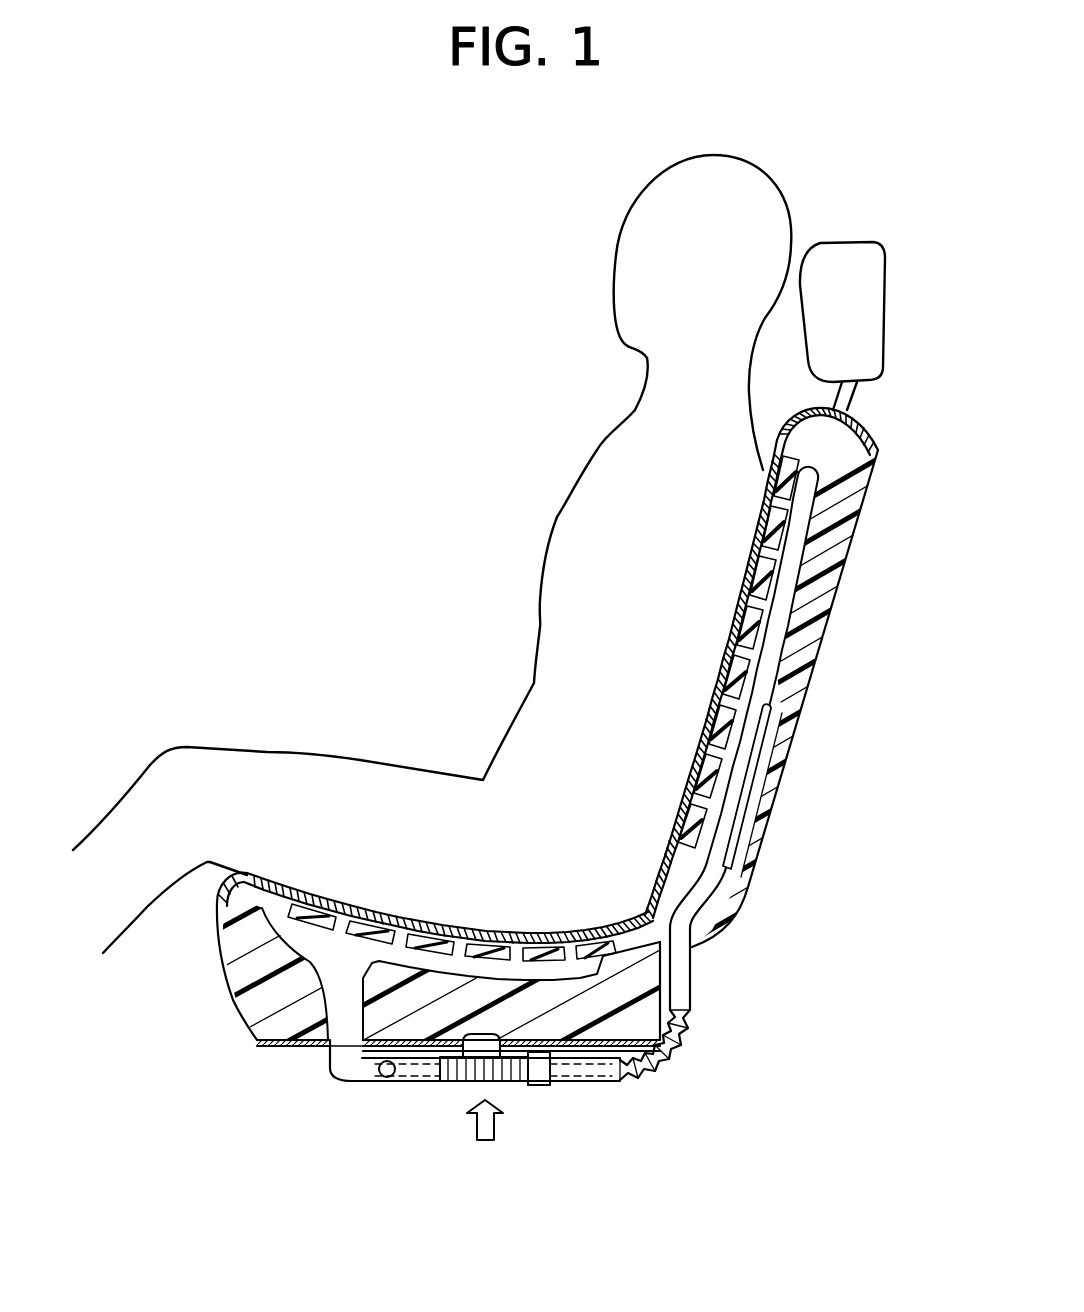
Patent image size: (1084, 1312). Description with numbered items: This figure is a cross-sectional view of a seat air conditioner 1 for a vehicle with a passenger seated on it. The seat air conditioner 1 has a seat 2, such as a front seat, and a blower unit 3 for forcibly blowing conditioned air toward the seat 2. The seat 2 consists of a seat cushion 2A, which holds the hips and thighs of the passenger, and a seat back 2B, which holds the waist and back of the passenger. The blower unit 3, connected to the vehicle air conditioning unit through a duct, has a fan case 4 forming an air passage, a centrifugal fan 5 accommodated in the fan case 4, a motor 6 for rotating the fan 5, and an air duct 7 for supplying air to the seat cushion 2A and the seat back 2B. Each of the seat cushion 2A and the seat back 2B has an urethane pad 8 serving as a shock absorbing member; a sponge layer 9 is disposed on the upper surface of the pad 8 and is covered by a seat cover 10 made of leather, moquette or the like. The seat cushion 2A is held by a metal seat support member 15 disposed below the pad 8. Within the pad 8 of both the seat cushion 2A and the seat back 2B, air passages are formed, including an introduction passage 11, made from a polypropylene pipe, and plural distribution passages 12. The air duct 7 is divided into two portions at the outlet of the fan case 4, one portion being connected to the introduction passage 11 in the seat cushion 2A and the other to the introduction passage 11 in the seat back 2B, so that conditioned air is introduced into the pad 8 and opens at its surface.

The seat air conditioner 1 is at (695, 1097).
The seat 2 is at (554, 716).
The seat cushion 2A is at (230, 997).
The seat back 2B is at (877, 430).
The blower unit 3 is at (432, 1098).
The fan case 4 is at (538, 1082).
The centrifugal fan 5 is at (503, 1082).
The motor 6 is at (473, 1053).
The air duct 7 is at (683, 982).
The urethane pad 8 is at (850, 503).
The sponge layer 9 is at (787, 557).
The seat cover 10 is at (753, 543).
The introduction passage 11 is at (753, 805).
The distribution passages 12 is at (777, 630).
The seat support member 15 is at (317, 1050).